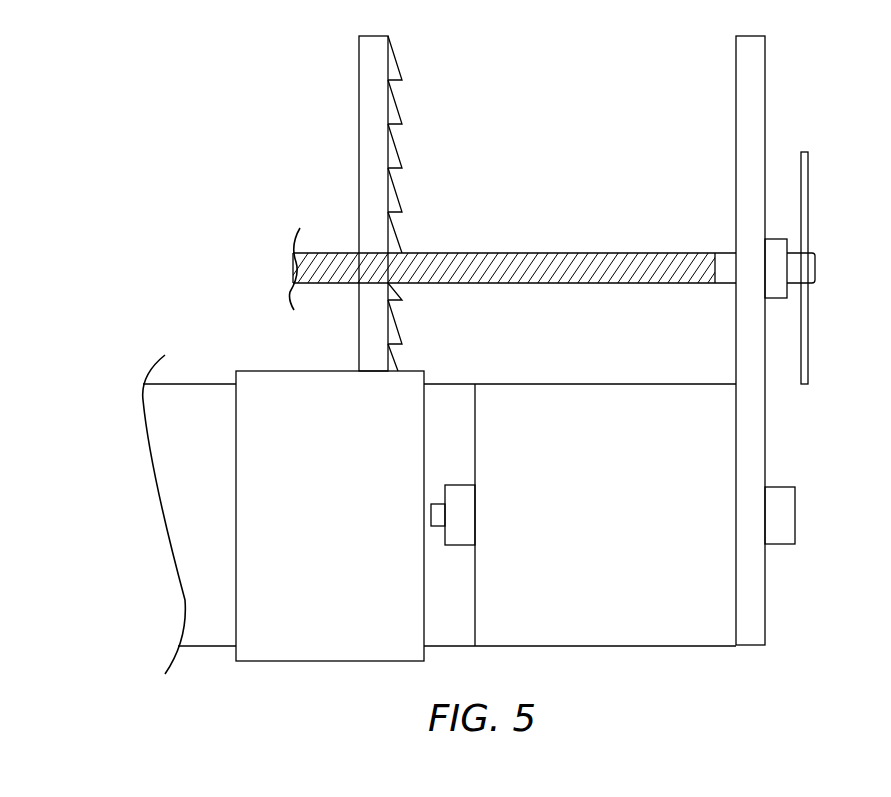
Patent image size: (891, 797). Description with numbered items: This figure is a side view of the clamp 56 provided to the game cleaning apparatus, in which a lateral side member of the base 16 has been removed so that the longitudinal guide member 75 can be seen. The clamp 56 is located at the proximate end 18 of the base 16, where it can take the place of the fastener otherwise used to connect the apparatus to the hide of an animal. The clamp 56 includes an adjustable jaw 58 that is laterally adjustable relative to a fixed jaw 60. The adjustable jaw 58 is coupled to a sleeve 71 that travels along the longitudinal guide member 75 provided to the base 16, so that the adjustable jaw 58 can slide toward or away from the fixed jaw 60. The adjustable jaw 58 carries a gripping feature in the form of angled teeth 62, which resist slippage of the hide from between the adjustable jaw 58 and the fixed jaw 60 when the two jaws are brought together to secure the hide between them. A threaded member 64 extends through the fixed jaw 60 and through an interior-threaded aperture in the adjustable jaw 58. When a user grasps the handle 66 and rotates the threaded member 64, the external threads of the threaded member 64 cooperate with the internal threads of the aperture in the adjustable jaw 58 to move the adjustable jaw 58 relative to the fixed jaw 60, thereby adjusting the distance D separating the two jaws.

The clamp 56 is at (86, 140).
The adjustable jaw 58 is at (375, 88).
The angled teeth 62 is at (398, 108).
The fixed jaw 60 is at (750, 82).
The distance D is at (734, 123).
The threaded member 64 is at (570, 253).
The handle 66 is at (810, 218).
The sleeve 71 is at (326, 507).
The longitudinal guide member 75 is at (210, 436).
The base 16 is at (646, 536).
The proximate end 18 is at (765, 622).